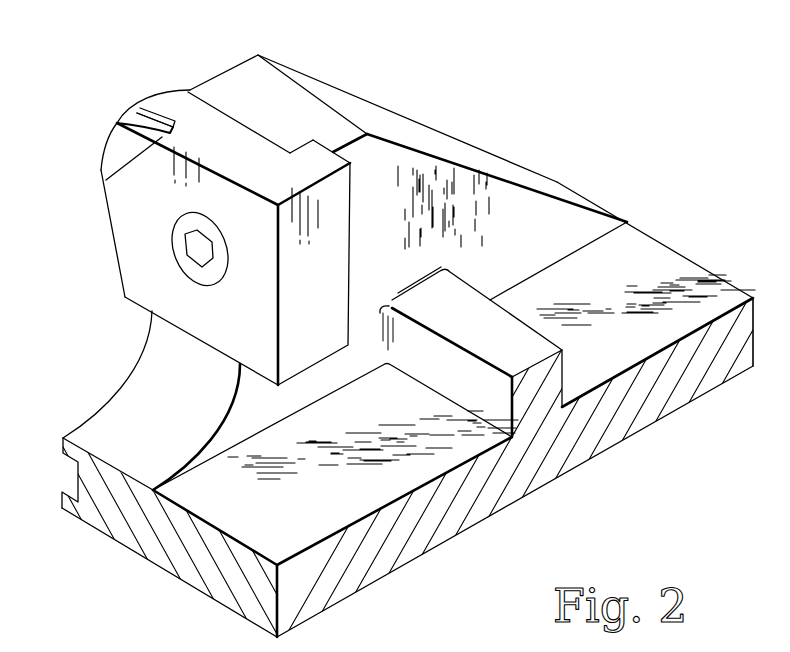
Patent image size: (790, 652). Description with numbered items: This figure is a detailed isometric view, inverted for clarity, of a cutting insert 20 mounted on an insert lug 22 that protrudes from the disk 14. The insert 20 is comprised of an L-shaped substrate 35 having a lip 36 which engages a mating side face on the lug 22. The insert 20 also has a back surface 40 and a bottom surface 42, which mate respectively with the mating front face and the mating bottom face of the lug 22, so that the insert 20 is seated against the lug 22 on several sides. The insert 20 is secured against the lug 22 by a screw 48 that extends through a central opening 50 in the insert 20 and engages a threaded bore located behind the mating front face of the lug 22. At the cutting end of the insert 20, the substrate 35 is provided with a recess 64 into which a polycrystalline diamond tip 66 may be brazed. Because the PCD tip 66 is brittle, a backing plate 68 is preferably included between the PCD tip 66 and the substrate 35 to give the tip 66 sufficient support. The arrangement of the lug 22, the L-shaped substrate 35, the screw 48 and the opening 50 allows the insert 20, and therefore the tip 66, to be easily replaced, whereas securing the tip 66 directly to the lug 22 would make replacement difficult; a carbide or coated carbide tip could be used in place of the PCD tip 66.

The disk 14 is at (655, 263).
The cutting insert 20 is at (128, 245).
The insert lug 22 is at (373, 158).
The L-shaped substrate 35 is at (200, 121).
The lip 36 is at (317, 158).
The back surface 40 is at (249, 126).
The bottom surface 42 is at (147, 318).
The screw 48 is at (185, 247).
The central opening 50 is at (183, 262).
The recess 64 is at (155, 112).
The PCD tip 66 is at (118, 147).
The backing plate 68 is at (141, 110).